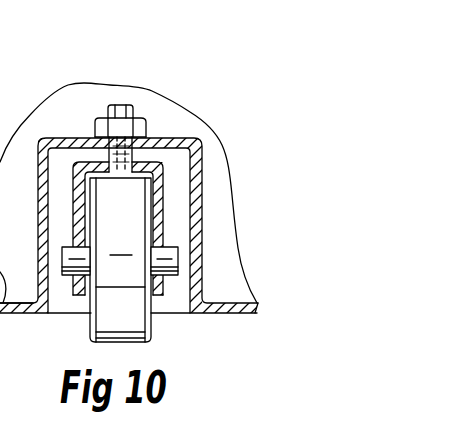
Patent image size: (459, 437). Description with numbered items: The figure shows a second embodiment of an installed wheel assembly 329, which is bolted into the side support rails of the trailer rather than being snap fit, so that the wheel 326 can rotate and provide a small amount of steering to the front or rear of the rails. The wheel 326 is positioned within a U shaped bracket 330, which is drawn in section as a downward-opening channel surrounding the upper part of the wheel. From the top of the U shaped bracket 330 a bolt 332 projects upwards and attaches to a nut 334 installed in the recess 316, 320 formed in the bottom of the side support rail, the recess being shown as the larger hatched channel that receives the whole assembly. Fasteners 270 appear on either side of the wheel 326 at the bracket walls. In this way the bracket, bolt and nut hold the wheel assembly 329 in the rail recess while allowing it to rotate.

The nuts 270 is at (171, 250).
The recess 316 is at (170, 300).
The recess 320 is at (256, 308).
The wheel 326 is at (95, 335).
The wheel assembly 329 is at (186, 140).
The U shaped bracket 330 is at (163, 199).
The bolt 332 is at (122, 106).
The nut 334 is at (156, 79).